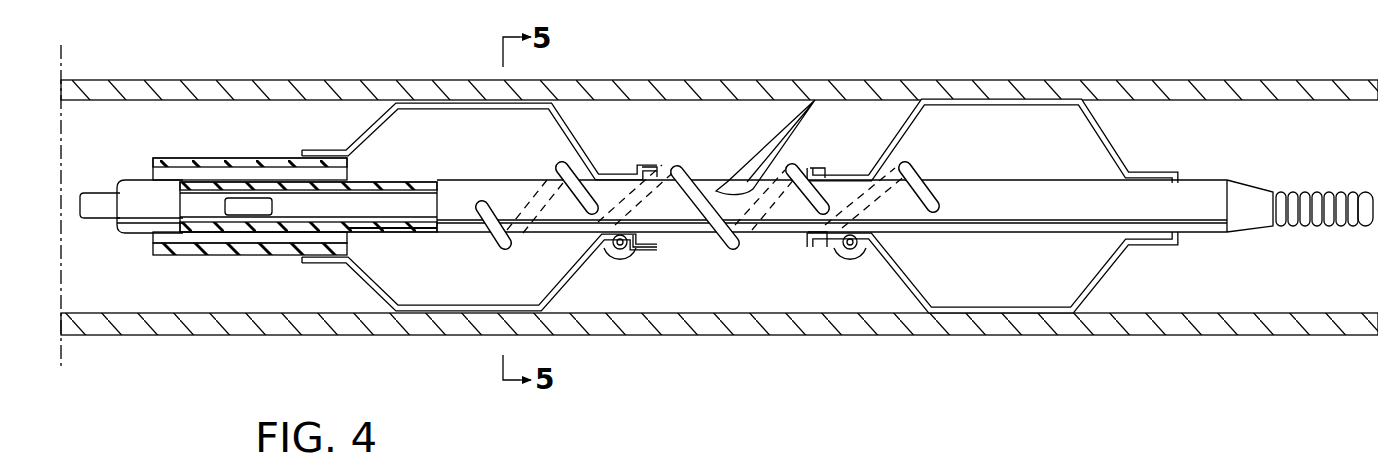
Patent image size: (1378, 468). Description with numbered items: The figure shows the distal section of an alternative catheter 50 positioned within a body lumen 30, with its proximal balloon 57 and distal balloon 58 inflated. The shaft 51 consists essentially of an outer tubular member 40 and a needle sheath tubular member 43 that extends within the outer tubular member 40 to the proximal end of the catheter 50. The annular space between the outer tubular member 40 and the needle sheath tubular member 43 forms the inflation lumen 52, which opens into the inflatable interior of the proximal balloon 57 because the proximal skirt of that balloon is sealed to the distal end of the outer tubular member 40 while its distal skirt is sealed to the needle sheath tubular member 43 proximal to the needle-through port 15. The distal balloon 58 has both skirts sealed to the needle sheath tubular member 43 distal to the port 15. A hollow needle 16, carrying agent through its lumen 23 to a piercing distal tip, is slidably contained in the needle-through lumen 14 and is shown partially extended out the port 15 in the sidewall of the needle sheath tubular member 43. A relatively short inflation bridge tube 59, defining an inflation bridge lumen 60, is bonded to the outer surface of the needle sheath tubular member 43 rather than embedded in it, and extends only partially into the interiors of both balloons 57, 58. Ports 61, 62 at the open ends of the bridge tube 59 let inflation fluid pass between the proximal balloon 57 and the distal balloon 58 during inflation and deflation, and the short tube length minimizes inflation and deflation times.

The needle-through lumen 14 is at (282, 233).
The needle-through port 15 is at (718, 177).
The hollow needle 16 is at (108, 188).
The lumen of the hollow needle 23 is at (257, 207).
The body lumen 30 is at (1362, 156).
The outer tubular member 40 is at (230, 255).
The needle sheath tubular member 43 is at (395, 235).
The catheter 50 is at (143, 128).
The shaft 51 is at (270, 157).
The inflation lumen 52 is at (183, 242).
The proximal balloon 57 is at (372, 135).
The distal balloon 58 is at (1110, 143).
The inflation bridge tube 59 is at (917, 172).
The inflation bridge lumen 60 is at (630, 258).
The port 61 is at (447, 172).
The port 62 is at (960, 240).